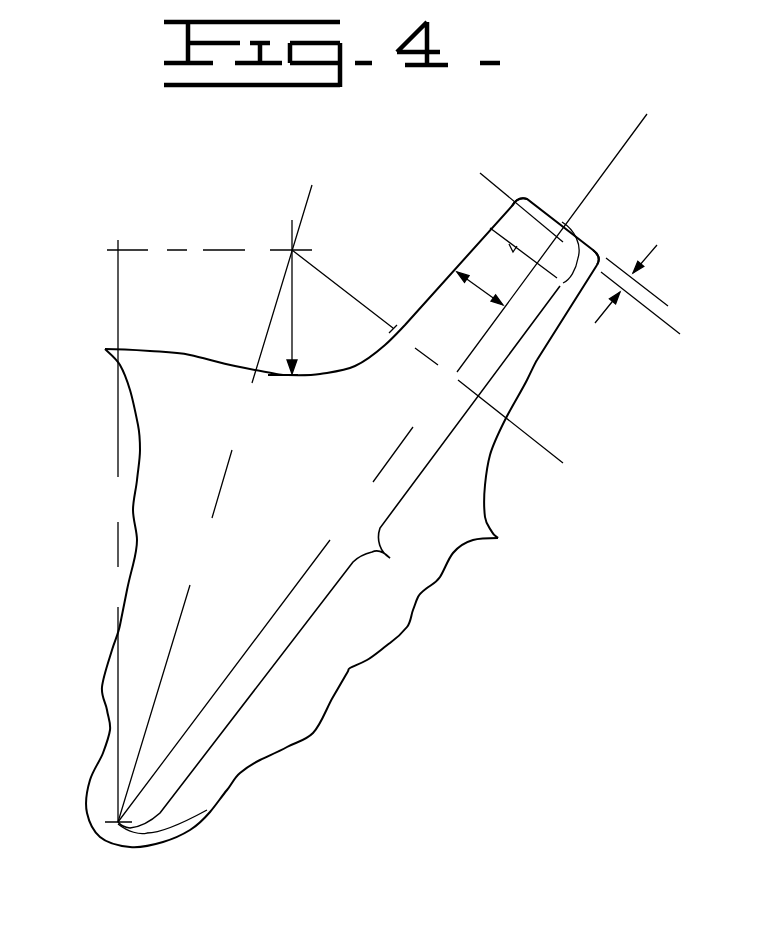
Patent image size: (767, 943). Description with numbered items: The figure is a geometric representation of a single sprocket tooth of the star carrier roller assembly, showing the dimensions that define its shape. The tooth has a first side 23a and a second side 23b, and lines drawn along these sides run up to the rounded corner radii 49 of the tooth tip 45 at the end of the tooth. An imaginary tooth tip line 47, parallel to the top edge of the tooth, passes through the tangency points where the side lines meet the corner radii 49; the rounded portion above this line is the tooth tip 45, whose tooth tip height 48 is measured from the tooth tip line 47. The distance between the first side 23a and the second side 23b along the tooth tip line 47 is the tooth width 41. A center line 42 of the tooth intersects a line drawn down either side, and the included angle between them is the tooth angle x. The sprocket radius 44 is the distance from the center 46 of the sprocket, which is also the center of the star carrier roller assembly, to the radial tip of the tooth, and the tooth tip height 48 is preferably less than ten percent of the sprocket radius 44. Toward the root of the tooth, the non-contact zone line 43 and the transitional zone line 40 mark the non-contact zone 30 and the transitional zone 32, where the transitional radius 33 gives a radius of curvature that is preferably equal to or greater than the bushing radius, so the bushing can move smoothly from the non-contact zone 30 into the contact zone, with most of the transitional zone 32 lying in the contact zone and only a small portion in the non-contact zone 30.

The non-contact zone 30 is at (196, 352).
The transitional zone 32 is at (320, 367).
The transitional radius 33 is at (290, 336).
The first side 23a is at (537, 362).
The second side 23b is at (420, 302).
The transitional zone line 40 is at (522, 435).
The tooth width 41 is at (484, 279).
The center line 42 is at (618, 143).
The non-contact zone line 43 is at (302, 206).
The sprocket radius 44 is at (339, 557).
The tooth tip 45 is at (555, 212).
The center 46 is at (207, 810).
The tooth tip line 47 is at (647, 312).
The tooth tip height 48 is at (660, 248).
The corner radius 49 is at (604, 256).
The tooth angle x is at (455, 282).